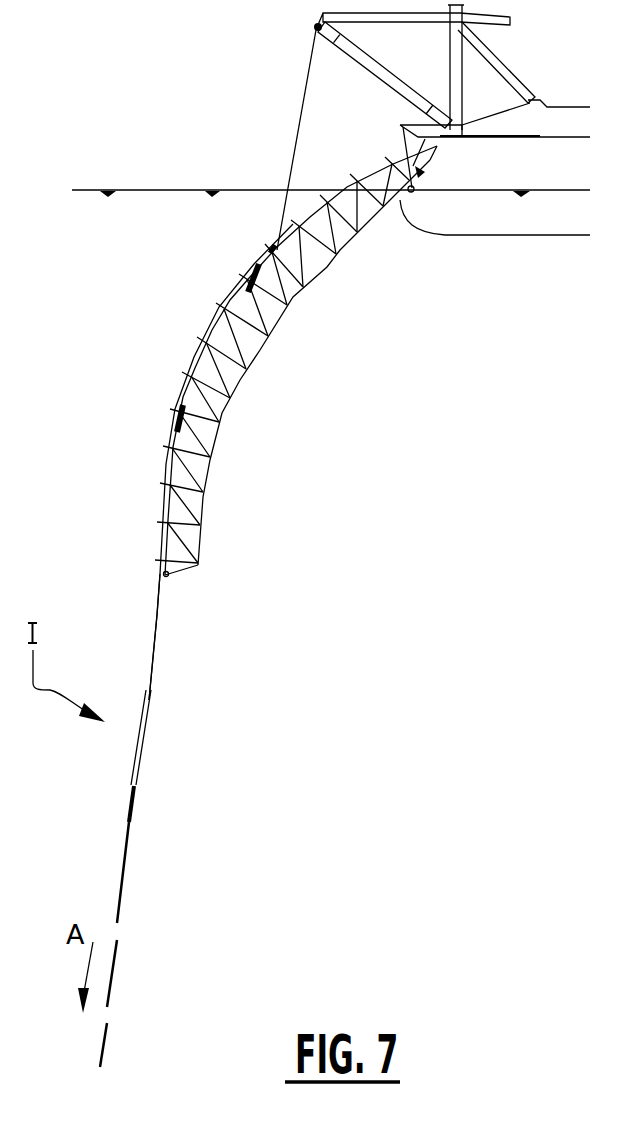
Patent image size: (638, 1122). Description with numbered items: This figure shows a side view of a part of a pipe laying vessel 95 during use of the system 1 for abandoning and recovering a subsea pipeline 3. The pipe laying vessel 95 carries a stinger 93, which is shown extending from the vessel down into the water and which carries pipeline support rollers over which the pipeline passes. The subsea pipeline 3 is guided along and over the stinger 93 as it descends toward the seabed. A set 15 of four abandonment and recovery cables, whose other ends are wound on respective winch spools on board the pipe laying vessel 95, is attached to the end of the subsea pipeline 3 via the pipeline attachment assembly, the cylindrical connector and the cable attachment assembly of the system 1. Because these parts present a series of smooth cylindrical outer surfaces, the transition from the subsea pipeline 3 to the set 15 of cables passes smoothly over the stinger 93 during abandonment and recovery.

The system 1 is at (148, 707).
The subsea pipeline 3 is at (127, 878).
The set of abandonment and recovery cables 15 is at (157, 613).
The stinger 93 is at (258, 353).
The pipe laying vessel 95 is at (500, 227).